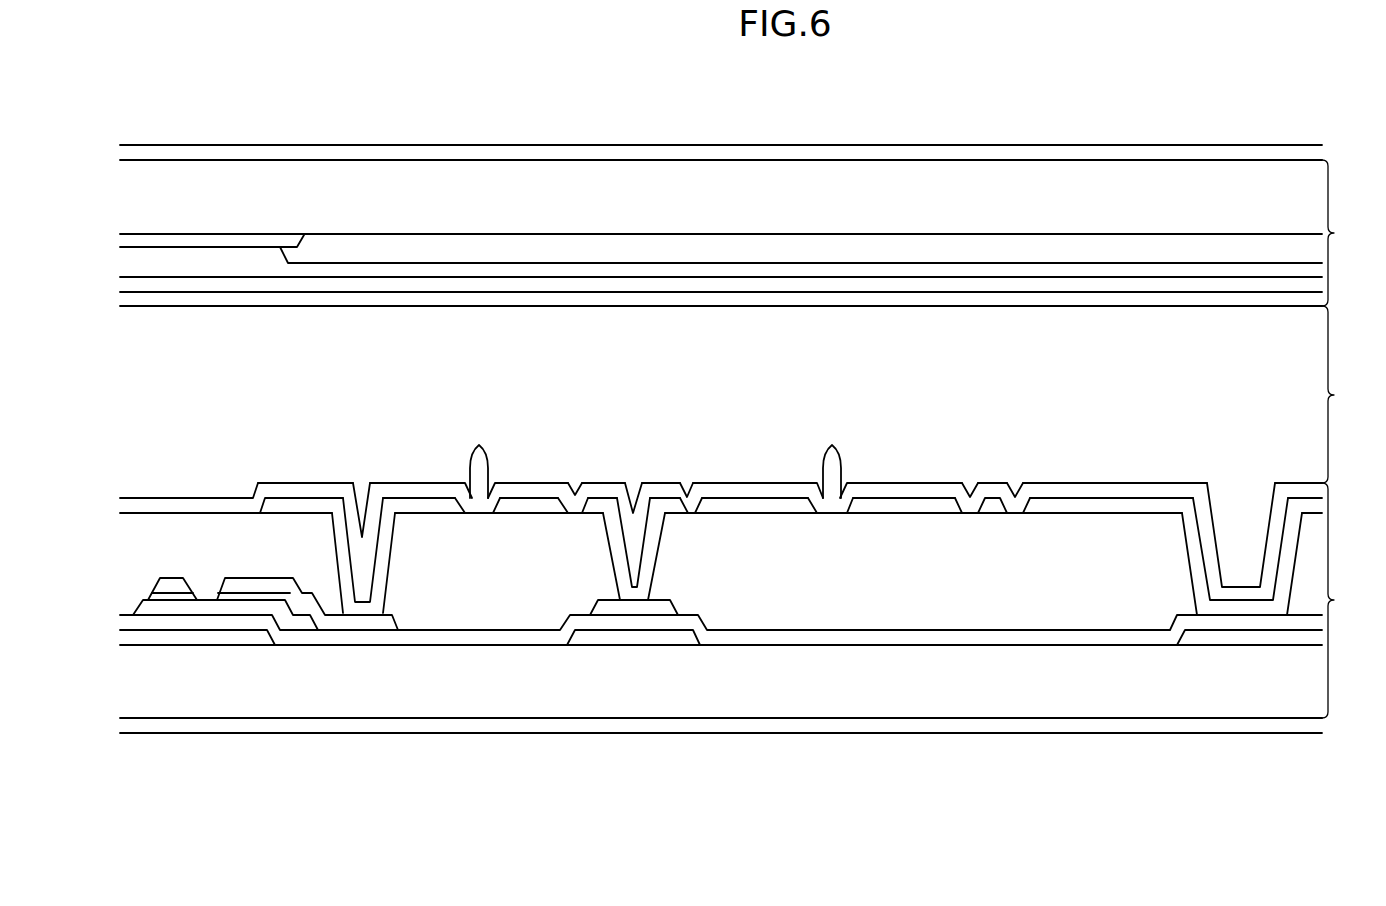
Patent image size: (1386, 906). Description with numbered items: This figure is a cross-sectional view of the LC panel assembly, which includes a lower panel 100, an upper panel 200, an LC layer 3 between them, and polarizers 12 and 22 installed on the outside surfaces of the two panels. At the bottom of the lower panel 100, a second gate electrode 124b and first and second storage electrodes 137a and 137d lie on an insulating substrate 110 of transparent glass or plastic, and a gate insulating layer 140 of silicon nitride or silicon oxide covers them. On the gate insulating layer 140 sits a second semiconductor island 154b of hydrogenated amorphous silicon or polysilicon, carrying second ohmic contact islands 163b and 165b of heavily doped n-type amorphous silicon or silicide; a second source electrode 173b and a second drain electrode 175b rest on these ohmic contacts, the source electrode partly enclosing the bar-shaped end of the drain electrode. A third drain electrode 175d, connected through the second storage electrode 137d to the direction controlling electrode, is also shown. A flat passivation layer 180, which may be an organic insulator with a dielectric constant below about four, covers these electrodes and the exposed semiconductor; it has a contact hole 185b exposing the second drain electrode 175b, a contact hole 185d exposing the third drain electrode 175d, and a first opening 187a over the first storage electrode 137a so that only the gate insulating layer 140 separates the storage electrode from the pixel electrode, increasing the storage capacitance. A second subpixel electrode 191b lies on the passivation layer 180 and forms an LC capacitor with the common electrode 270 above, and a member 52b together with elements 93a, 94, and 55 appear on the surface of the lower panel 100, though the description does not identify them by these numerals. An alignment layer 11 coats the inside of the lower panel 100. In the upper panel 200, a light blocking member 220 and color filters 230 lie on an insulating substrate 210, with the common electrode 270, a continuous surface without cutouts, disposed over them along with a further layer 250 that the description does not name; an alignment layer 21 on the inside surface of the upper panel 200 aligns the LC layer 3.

The polarizer 22 is at (1310, 153).
The upper panel 200 is at (1350, 233).
The insulating substrate 210 is at (797, 185).
The light blocking member 220 is at (251, 242).
The color filter 230 is at (376, 250).
The overcoat 250 is at (522, 272).
The common electrode 270 is at (658, 290).
The alignment layer 21 is at (803, 297).
The LC layer 3 is at (1342, 394).
The lower panel 100 is at (1351, 600).
The polarizer 12 is at (1310, 727).
The insulating substrate 110 is at (1015, 702).
The second gate electrode 124b is at (165, 638).
The gate insulating layer 140 is at (907, 638).
The second semiconductor island 154b is at (198, 607).
The second ohmic contact island 163b is at (178, 598).
The second ohmic contact island 165b is at (272, 630).
The second source electrode 173b is at (168, 587).
The second drain electrode 175b is at (238, 590).
The third drain electrode 175d is at (612, 612).
The second storage electrode 137d is at (652, 637).
The first storage electrode 137a is at (1243, 637).
The passivation layer 180 is at (808, 590).
The second subpixel electrode 191b is at (287, 505).
The connecting electrode 52b is at (667, 507).
The alignment layer 11 is at (757, 490).
The column spacer 93a is at (477, 465).
The column spacer 94 is at (830, 465).
The protrusion 55 is at (993, 505).
The contact hole 185b is at (337, 553).
The contact hole 185d is at (610, 545).
The first opening 187a is at (1190, 547).